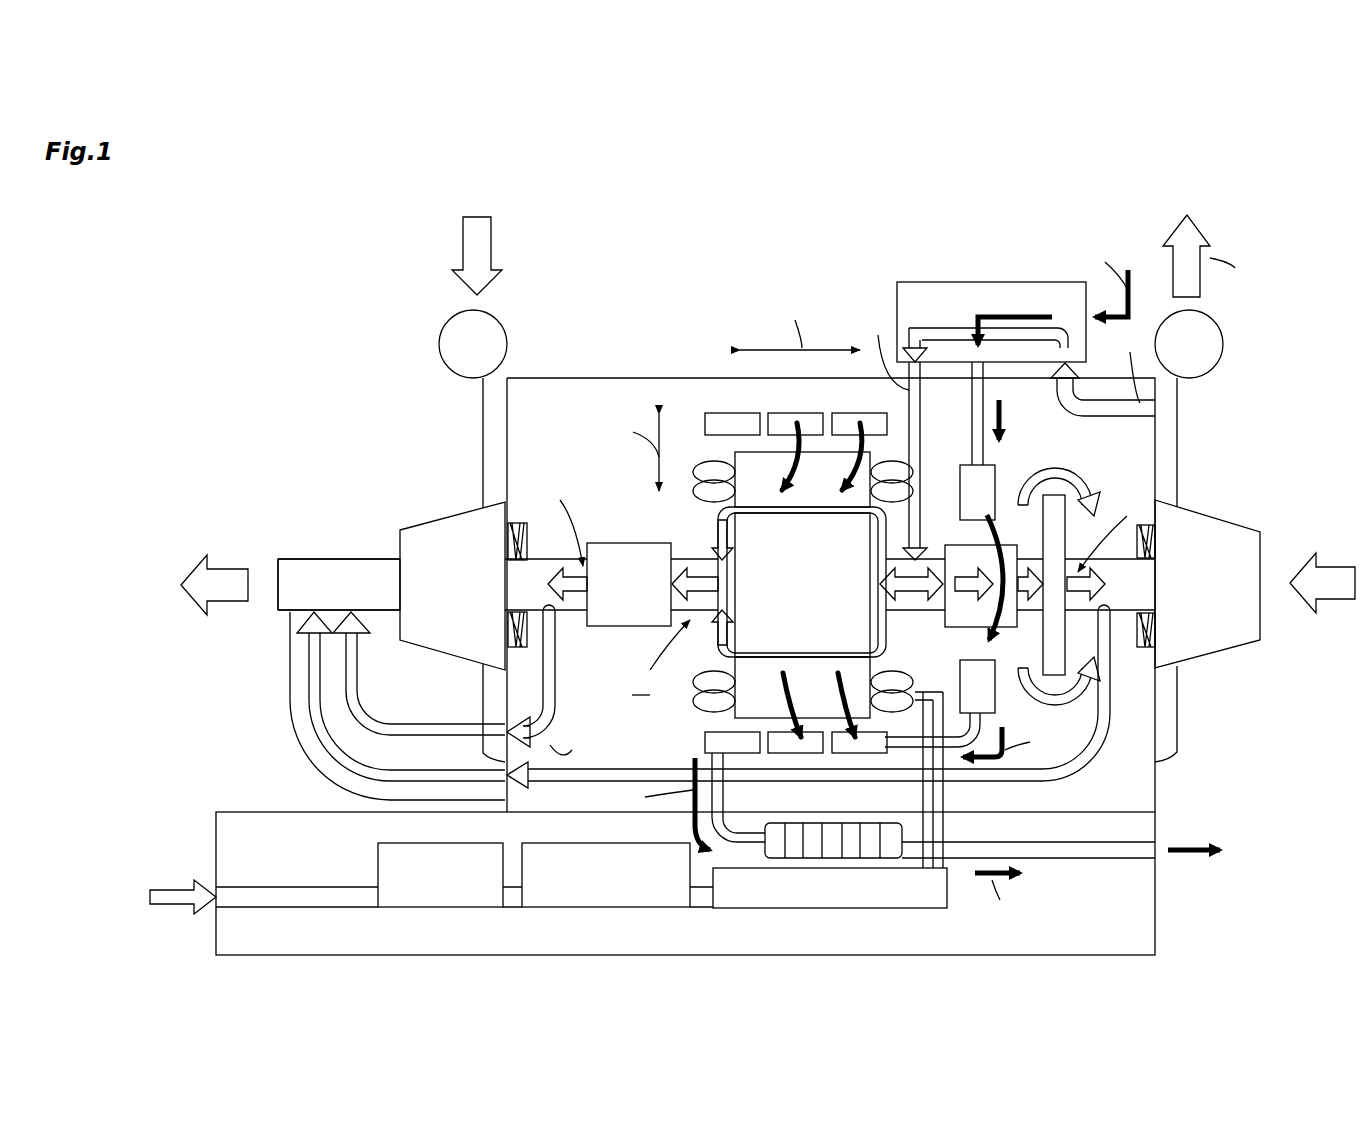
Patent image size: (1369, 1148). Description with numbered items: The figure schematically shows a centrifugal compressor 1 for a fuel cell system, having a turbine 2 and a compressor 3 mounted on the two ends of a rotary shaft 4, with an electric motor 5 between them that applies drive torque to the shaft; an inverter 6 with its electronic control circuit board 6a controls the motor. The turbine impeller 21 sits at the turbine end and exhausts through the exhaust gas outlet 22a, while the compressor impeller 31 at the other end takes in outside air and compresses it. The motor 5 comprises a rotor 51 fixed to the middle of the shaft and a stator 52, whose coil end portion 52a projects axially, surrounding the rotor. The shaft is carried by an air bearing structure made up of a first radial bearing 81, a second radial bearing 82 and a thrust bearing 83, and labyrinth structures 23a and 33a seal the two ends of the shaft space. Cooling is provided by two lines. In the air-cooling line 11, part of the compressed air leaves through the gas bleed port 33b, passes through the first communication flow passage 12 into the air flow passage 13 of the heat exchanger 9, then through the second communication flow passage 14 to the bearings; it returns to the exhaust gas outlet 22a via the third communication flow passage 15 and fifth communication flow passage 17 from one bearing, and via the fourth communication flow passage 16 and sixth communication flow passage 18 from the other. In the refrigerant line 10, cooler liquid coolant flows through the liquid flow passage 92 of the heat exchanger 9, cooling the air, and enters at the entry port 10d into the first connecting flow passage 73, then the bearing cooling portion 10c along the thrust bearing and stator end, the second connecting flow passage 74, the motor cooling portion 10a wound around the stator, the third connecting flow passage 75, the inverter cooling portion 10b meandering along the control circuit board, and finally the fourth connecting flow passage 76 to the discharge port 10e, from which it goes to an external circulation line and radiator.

The centrifugal compressor 1 is at (246, 238).
The turbine 2 is at (440, 332).
The compressor 3 is at (1228, 345).
The rotary shaft 4 is at (702, 558).
The electric motor 5 is at (718, 318).
The rotor 51 is at (757, 522).
The stator 52 is at (747, 468).
The end portion of the stator 52a is at (995, 690).
The inverter 6 is at (635, 955).
The electronic control circuit board 6a is at (878, 908).
The first radial bearing 81 is at (940, 622).
The second radial bearing 82 is at (627, 543).
The thrust bearing 83 is at (1067, 540).
The heat exchanger 9 is at (897, 280).
The liquid flow passage 92 is at (1005, 317).
The refrigerant line 10 is at (1065, 862).
The motor cooling portion 10a is at (705, 742).
The inverter cooling portion 10b is at (775, 858).
The bearing cooling portion 10c is at (995, 490).
The entry port 10d is at (975, 385).
The discharge port 10e is at (1158, 852).
The air-cooling line 11 is at (965, 790).
The first communication flow passage 12 is at (1150, 416).
The air flow passage 13 is at (938, 328).
The second communication flow passage 14 is at (920, 385).
The third communication flow passage 15 is at (1092, 768).
The fourth communication flow passage 16 is at (556, 658).
The fifth communication flow passage 17 is at (318, 743).
The sixth communication flow passage 18 is at (372, 703).
The turbine impeller 21 is at (445, 518).
The exhaust gas outlet 22a is at (370, 610).
The labyrinth structure 23a is at (517, 522).
The compressor impeller 31 is at (1225, 527).
The labyrinth structure 33a is at (1152, 628).
The gas bleed port 33b is at (1160, 404).
The first connecting flow passage 73 is at (972, 420).
The second connecting flow passage 74 is at (893, 760).
The third connecting flow passage 75 is at (725, 792).
The fourth connecting flow passage 76 is at (1068, 860).